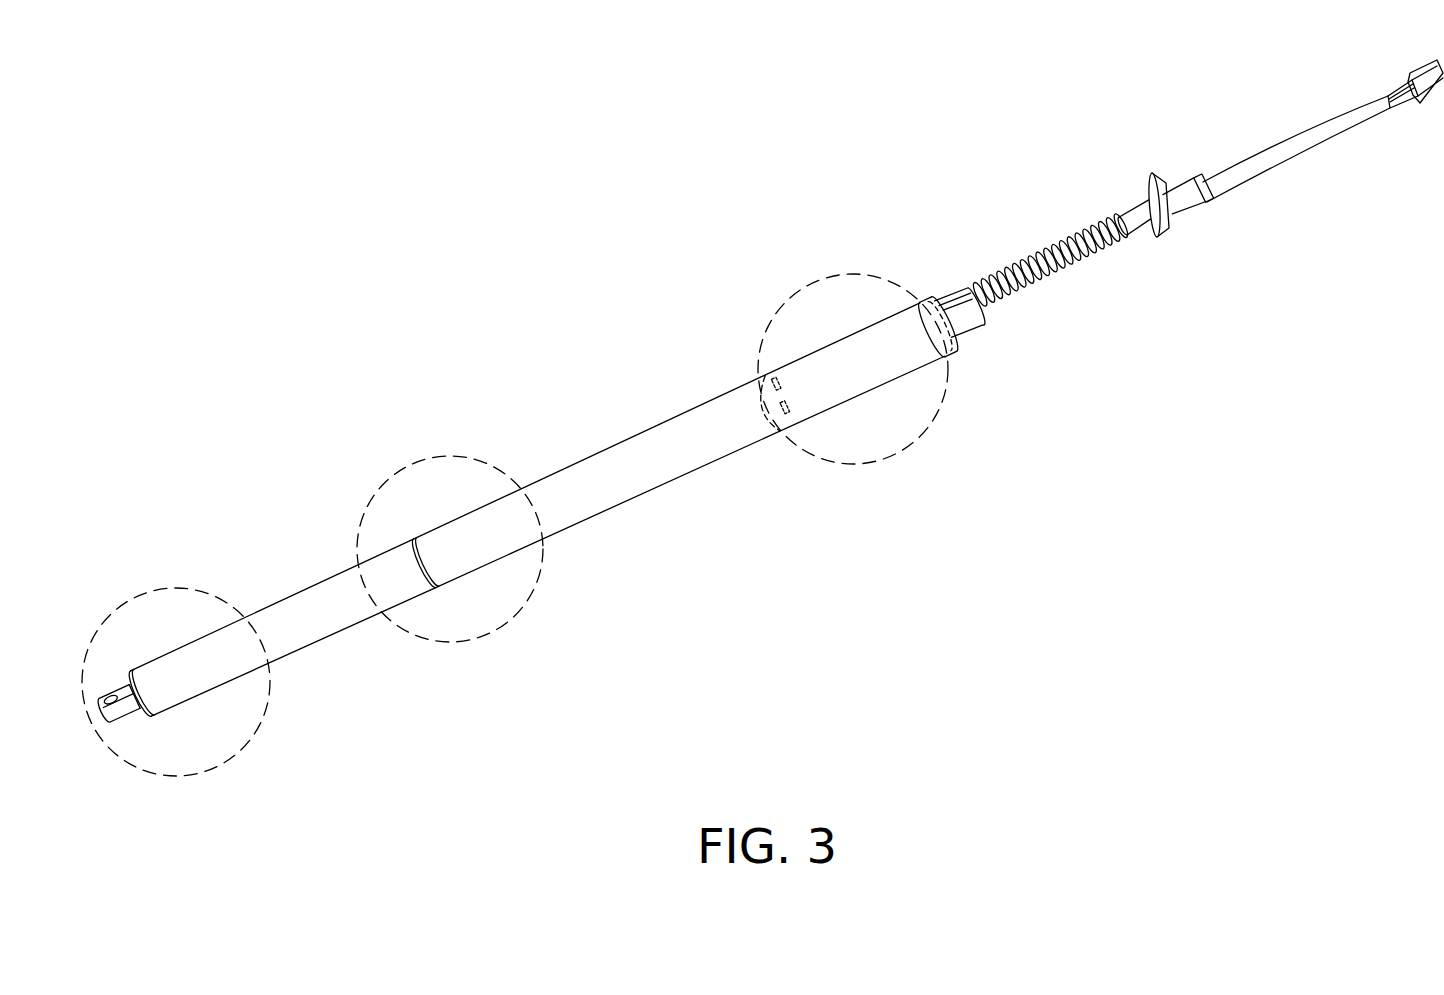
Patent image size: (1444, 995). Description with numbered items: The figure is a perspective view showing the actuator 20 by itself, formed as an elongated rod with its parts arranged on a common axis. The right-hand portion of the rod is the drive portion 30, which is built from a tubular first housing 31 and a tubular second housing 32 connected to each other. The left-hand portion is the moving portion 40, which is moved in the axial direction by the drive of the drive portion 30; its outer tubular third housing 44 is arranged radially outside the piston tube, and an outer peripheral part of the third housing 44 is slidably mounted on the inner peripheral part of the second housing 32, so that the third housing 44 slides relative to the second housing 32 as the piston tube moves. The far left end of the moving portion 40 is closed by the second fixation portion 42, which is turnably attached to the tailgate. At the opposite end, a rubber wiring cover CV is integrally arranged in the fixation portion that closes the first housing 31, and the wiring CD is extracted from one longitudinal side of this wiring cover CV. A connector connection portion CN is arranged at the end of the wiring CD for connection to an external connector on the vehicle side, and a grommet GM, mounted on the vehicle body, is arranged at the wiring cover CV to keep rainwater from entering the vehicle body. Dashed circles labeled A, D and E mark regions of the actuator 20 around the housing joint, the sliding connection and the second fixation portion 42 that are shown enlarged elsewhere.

The actuator 20 is at (762, 435).
The drive portion 30 is at (702, 440).
The first housing 31 is at (845, 377).
The second housing 32 is at (647, 465).
The moving portion 40 is at (267, 612).
The second fixation portion 42 is at (122, 713).
The third housing 44 is at (320, 617).
The wiring cover CV is at (1063, 262).
The grommet GM is at (1167, 203).
The wiring CD is at (1405, 100).
The connector connection portion CN is at (1422, 72).
The detail region A is at (875, 278).
The detail region D is at (472, 458).
The detail region E is at (200, 592).